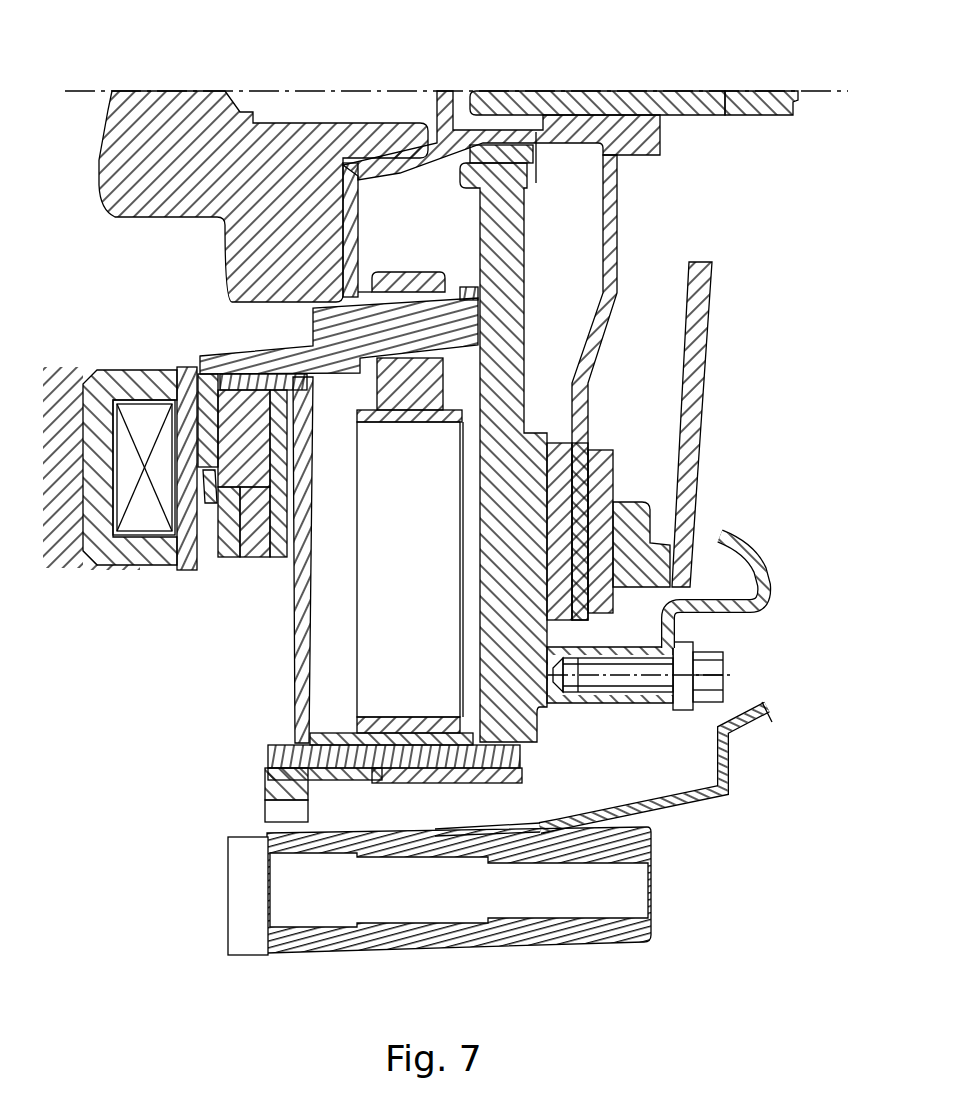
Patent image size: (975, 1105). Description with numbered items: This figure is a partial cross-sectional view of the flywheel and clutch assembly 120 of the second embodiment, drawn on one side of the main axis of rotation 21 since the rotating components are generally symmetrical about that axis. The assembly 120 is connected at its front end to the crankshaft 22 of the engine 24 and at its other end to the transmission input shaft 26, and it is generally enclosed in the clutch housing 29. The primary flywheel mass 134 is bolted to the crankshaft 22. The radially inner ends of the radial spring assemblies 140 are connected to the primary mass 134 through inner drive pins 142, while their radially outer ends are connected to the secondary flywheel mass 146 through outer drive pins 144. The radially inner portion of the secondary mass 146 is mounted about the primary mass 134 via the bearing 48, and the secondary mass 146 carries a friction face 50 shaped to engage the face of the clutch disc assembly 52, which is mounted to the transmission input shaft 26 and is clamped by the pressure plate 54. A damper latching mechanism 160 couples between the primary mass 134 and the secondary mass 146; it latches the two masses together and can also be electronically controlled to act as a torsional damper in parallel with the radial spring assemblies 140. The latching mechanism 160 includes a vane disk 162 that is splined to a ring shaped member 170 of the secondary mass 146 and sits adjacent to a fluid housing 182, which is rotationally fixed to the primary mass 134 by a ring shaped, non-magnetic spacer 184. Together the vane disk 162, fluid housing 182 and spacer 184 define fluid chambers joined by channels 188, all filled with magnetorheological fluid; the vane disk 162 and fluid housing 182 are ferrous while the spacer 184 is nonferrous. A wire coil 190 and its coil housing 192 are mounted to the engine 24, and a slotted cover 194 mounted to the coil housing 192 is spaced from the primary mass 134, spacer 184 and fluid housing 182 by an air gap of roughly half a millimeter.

The main axis of rotation 21 is at (825, 86).
The crankshaft 22 is at (200, 222).
The engine 24 is at (52, 545).
The transmission input shaft 26 is at (743, 116).
The clutch housing 29 is at (733, 768).
The bearing 48 is at (497, 143).
The friction face 50 is at (640, 583).
The clutch disc assembly 52 is at (617, 213).
The pressure plate 54 is at (550, 572).
The flywheel and clutch assembly 120 is at (349, 879).
The primary flywheel mass 134 is at (380, 180).
The radial spring assemblies 140 is at (357, 683).
The inner drive pins 142 is at (312, 332).
The outer drive pins 144 is at (290, 745).
The secondary flywheel mass 146 is at (528, 213).
The damper latching mechanism 160 is at (112, 282).
The vane disk 162 is at (247, 560).
The ring shaped member 170 is at (292, 660).
The fluid housing 182 is at (217, 560).
The spacer 184 is at (190, 568).
The channels 188 is at (278, 560).
The wire coil 190 is at (150, 400).
The coil housing 192 is at (118, 370).
The slotted cover 194 is at (205, 368).